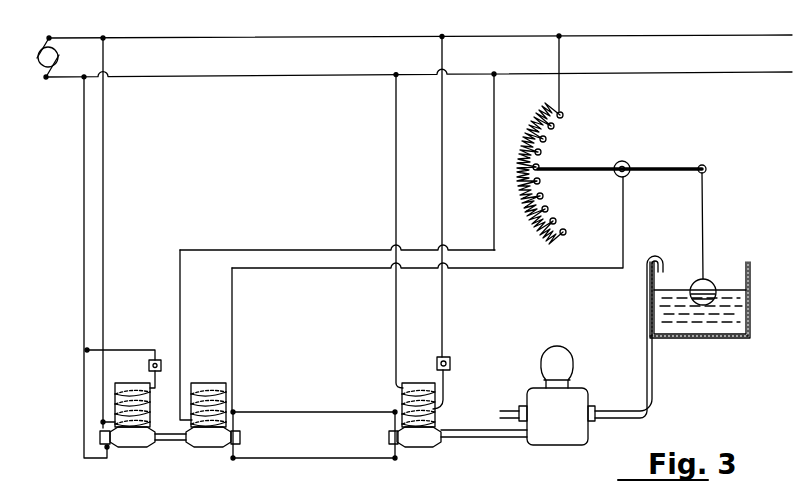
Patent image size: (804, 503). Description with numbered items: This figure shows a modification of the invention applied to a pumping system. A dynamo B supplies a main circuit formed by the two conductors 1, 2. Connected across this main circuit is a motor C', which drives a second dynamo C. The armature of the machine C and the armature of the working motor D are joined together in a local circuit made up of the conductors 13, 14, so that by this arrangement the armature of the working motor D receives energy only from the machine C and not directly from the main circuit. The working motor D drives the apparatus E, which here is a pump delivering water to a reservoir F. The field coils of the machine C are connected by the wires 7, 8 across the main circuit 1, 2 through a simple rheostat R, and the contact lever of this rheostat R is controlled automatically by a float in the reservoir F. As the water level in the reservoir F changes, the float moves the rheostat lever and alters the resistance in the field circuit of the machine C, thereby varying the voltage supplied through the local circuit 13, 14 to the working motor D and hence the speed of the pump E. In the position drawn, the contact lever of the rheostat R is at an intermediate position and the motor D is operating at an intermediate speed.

The main circuit conductor 1 is at (418, 67).
The main circuit conductor 2 is at (419, 29).
The field coil wire 7 is at (337, 325).
The field coil wire 8 is at (427, 294).
The local circuit conductor 13 is at (314, 404).
The local circuit conductor 14 is at (314, 436).
The dynamo B is at (37, 51).
The dynamo C is at (197, 431).
The motor C' is at (123, 413).
The working motor D is at (458, 418).
The pump E is at (581, 365).
The reservoir F is at (708, 255).
The rheostat R is at (611, 173).